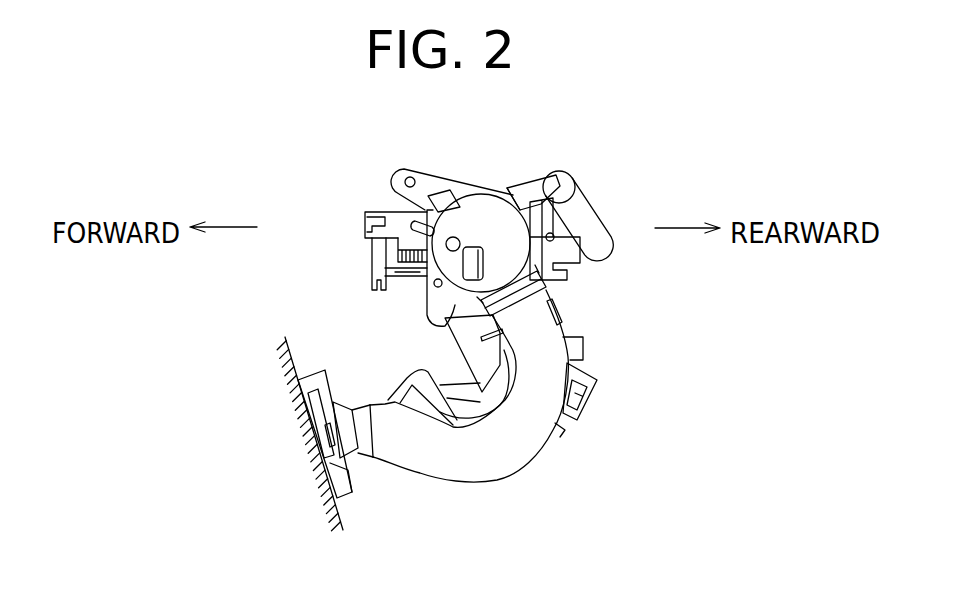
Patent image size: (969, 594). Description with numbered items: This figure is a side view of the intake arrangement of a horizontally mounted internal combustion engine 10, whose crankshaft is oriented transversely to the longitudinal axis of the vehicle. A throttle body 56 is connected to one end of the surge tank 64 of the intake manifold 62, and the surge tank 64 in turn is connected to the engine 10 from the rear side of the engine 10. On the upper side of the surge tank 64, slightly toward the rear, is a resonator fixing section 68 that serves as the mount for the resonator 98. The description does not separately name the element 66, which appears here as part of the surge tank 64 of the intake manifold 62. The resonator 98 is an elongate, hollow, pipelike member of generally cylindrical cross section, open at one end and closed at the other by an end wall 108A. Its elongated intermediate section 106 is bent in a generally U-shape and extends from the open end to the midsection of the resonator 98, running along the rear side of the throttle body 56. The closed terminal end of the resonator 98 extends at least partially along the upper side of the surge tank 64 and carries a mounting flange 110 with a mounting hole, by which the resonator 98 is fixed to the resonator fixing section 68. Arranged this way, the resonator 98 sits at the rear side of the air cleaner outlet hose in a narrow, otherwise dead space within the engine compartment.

The internal combustion engine 10 is at (343, 522).
The throttle body 56 is at (428, 298).
The intake manifold 62 is at (570, 440).
The surge tank 64 is at (440, 319).
The curved tube 66 is at (513, 450).
The resonator fixing section 68 is at (503, 192).
The resonator 98 is at (602, 197).
The intermediate section 106 is at (613, 253).
The end wall 108A is at (560, 181).
The mounting flange 110 is at (527, 182).